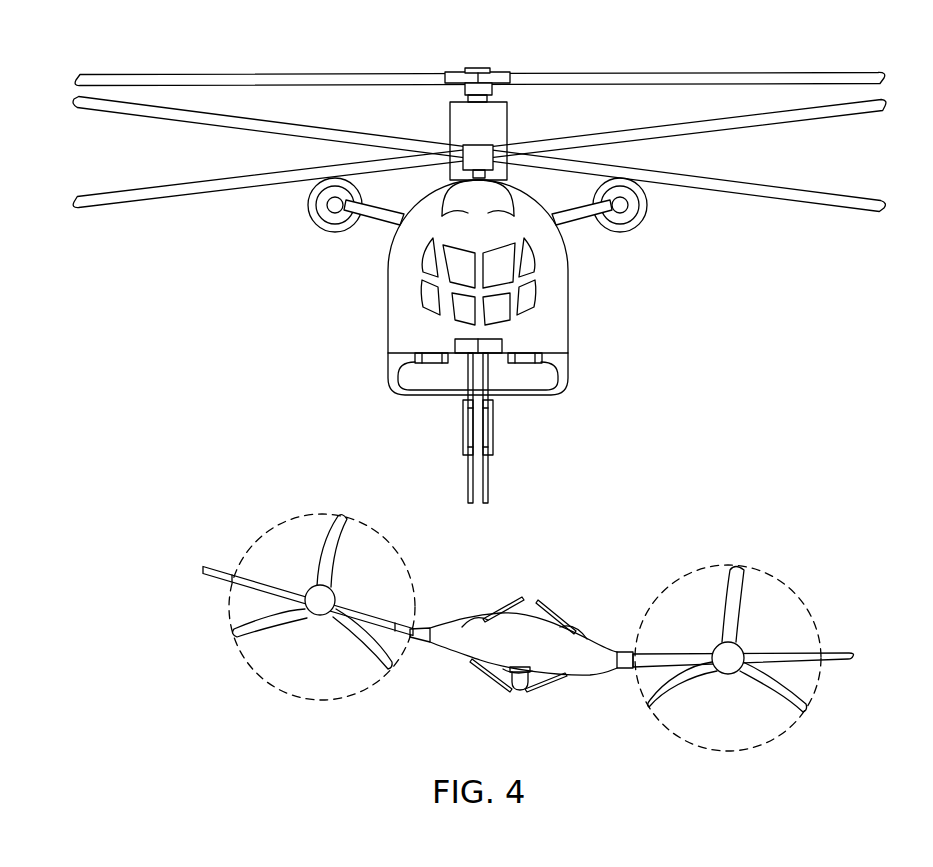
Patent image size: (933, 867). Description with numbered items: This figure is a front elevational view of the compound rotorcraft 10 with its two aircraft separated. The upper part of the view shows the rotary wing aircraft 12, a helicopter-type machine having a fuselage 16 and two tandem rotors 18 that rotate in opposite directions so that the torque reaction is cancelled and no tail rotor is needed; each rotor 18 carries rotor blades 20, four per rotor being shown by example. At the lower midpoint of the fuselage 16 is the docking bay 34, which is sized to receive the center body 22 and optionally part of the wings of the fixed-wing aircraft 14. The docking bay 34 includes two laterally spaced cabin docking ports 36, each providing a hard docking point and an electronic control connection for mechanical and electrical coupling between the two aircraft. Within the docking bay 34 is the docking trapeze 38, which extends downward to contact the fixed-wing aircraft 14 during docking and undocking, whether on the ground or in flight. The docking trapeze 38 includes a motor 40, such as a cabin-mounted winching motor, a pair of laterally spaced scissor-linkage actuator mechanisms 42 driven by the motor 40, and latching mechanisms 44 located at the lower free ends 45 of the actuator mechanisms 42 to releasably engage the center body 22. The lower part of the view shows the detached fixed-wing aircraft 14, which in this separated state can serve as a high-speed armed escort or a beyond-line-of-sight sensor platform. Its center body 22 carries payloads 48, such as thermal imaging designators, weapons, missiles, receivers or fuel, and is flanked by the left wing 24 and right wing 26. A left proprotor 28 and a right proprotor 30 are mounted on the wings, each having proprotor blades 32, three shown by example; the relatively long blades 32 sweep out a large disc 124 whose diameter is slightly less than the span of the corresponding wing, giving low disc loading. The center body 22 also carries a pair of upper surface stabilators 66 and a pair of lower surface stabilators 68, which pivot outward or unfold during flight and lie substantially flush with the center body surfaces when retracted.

The compound rotorcraft 10 is at (484, 390).
The rotary wing aircraft 12 is at (479, 288).
The fixed-wing aircraft 14 is at (524, 640).
The fuselage 16 is at (388, 313).
The rotor 18 is at (485, 71).
The rotor blades 20 is at (695, 73).
The center body 22 is at (474, 650).
The left wing 24 is at (840, 651).
The right wing 26 is at (212, 568).
The left proprotor 28 is at (727, 670).
The right proprotor 30 is at (318, 615).
The proprotor blades 32 is at (268, 638).
The docking bay 34 is at (532, 389).
The cabin docking port 36 is at (398, 367).
The docking trapeze 38 is at (476, 436).
The motor 40 is at (498, 345).
The actuator mechanism 42 is at (463, 443).
The latching mechanism 44 is at (486, 505).
The lower free end 45 is at (466, 489).
The payloads 48 is at (520, 691).
The upper surface stabilators 66 is at (502, 598).
The lower surface stabilators 68 is at (484, 680).
The disc 124 is at (796, 593).